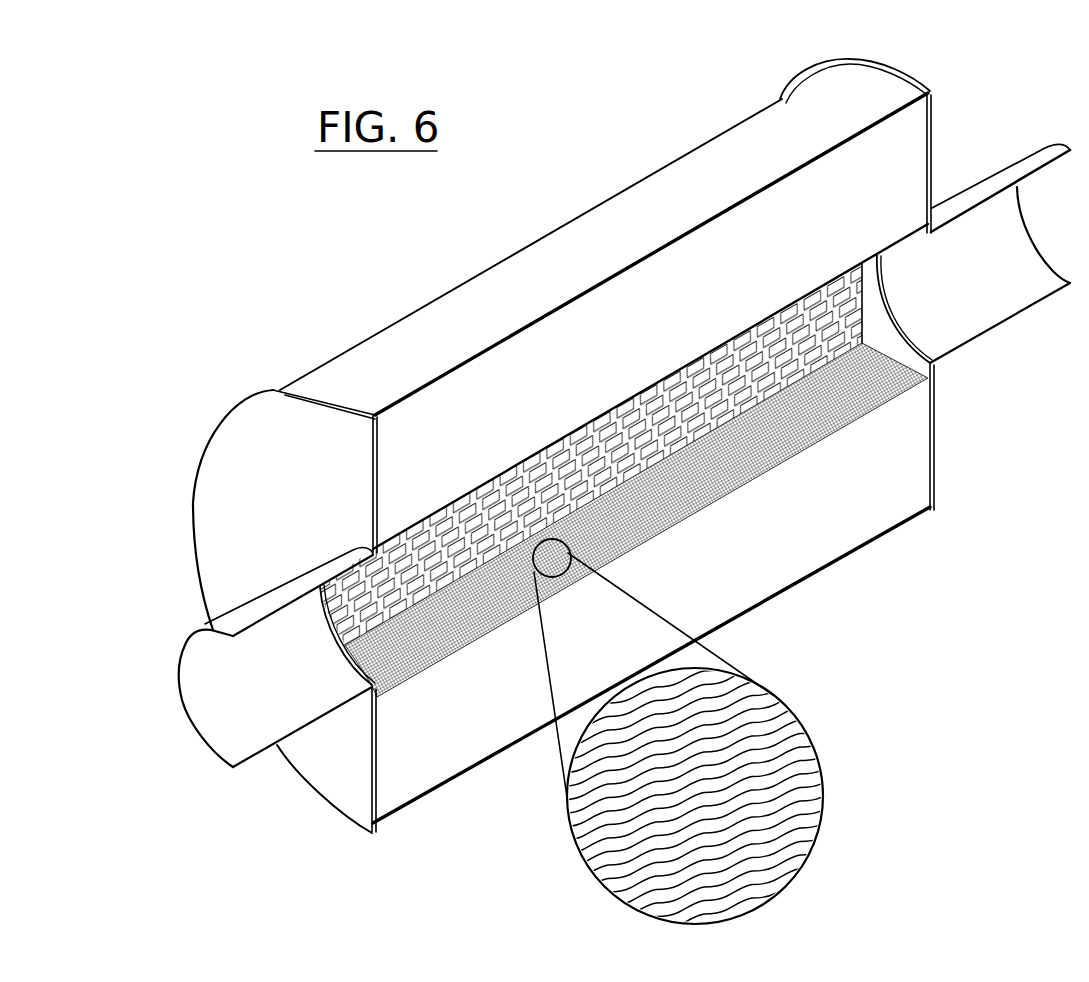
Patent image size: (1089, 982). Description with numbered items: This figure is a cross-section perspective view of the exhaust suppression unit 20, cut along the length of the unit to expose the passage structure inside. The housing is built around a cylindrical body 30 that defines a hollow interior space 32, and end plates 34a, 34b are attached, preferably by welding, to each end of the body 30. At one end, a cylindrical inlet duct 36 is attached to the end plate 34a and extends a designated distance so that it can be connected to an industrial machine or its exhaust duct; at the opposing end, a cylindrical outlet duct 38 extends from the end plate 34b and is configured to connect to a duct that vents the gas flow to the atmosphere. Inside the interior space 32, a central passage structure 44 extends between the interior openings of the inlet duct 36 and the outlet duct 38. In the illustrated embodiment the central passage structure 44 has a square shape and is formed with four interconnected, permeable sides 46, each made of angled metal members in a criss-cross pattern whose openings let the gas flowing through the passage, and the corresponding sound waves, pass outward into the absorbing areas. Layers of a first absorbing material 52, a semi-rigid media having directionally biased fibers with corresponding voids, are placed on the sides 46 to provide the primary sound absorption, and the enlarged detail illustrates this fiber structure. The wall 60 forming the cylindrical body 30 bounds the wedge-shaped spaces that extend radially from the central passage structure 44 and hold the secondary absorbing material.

The suppression unit 20 is at (339, 310).
The cylindrical body 30 is at (619, 182).
The hollow interior space 32 is at (487, 380).
The end plate 34a is at (882, 67).
The end plate 34b is at (250, 468).
The inlet duct 36 is at (982, 190).
The outlet duct 38 is at (190, 640).
The central passage structure 44 is at (655, 377).
The permeable sides 46 is at (772, 398).
The first absorbing material 52 is at (773, 773).
The wall 60 is at (723, 178).